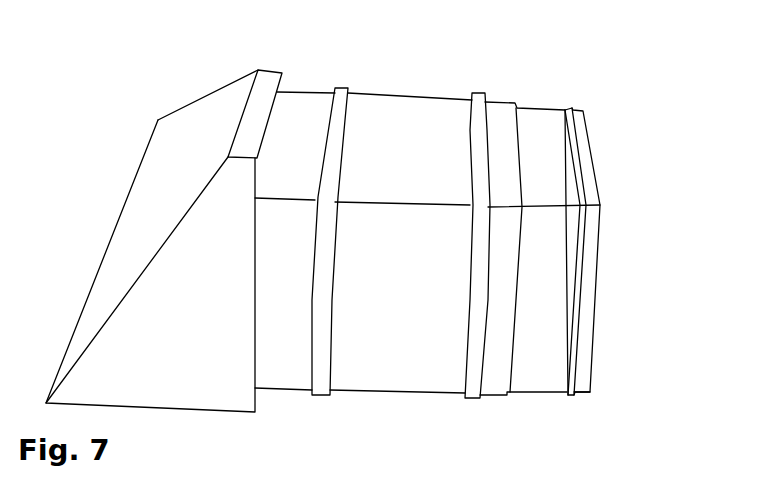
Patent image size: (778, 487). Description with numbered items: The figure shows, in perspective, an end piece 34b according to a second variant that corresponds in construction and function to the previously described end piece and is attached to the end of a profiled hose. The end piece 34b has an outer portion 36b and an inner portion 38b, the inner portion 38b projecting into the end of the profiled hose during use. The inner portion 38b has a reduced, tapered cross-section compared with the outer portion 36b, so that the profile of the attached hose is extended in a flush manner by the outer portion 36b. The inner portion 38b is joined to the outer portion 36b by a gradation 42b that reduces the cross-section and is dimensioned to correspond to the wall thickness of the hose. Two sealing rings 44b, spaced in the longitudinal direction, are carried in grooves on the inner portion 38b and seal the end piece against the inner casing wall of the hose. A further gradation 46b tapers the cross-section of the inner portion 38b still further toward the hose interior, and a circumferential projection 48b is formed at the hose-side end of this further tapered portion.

The end piece 34b is at (156, 41).
The outer portion 36b is at (143, 222).
The inner portion 38b is at (413, 111).
The gradation 42b is at (287, 82).
The sealing rings 44b is at (323, 260).
The further gradation 46b is at (524, 100).
The projection 48b is at (580, 288).